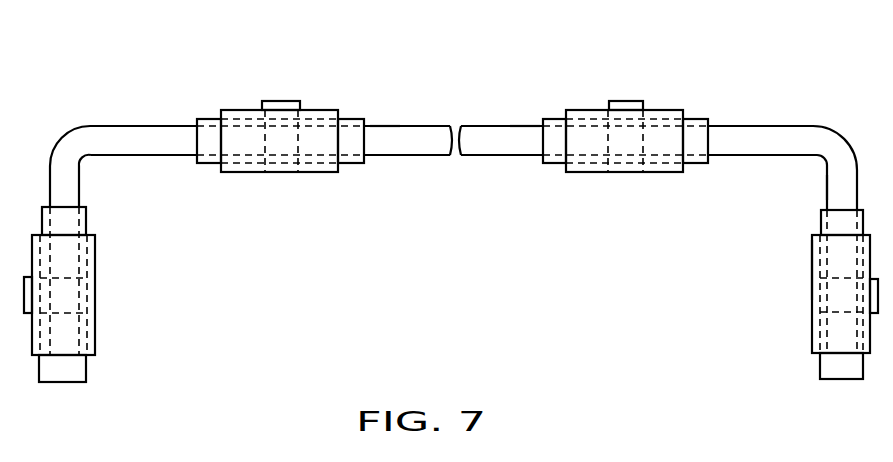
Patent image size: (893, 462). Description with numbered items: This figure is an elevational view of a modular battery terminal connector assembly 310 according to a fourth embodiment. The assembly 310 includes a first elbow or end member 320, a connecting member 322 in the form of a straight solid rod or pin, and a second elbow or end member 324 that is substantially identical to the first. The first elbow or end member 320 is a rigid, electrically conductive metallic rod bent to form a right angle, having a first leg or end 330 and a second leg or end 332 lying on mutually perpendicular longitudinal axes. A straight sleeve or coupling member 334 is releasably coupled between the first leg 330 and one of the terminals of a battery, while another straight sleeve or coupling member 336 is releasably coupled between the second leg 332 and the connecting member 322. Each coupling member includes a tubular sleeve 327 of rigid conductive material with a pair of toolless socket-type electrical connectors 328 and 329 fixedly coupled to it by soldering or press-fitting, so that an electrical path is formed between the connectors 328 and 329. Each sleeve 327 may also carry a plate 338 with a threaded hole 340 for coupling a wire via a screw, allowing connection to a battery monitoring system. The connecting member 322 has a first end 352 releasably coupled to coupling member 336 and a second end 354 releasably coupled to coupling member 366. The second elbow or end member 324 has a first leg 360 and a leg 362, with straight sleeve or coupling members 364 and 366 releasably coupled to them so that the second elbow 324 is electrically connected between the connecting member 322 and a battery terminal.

The modular battery terminal connector assembly 310 is at (544, 72).
The first elbow or end member 320 is at (798, 120).
The connecting member 322 is at (441, 114).
The second elbow or end member 324 is at (122, 120).
The sleeve 327 is at (812, 248).
The electrical connector 328 is at (196, 118).
The electrical connector 329 is at (355, 165).
The first leg or end 330 is at (827, 180).
The second leg or end 332 is at (735, 126).
The straight sleeve or coupling member 334 is at (799, 302).
The straight sleeve or coupling member 336 is at (622, 178).
The plate 338 is at (300, 105).
The threaded hole 340 is at (281, 101).
The first end 352 is at (543, 128).
The second end 354 is at (380, 125).
The first leg 360 is at (49, 180).
The first leg or end 362 is at (143, 157).
The straight sleeve or coupling member 364 is at (98, 288).
The straight sleeve or coupling member 366 is at (292, 178).